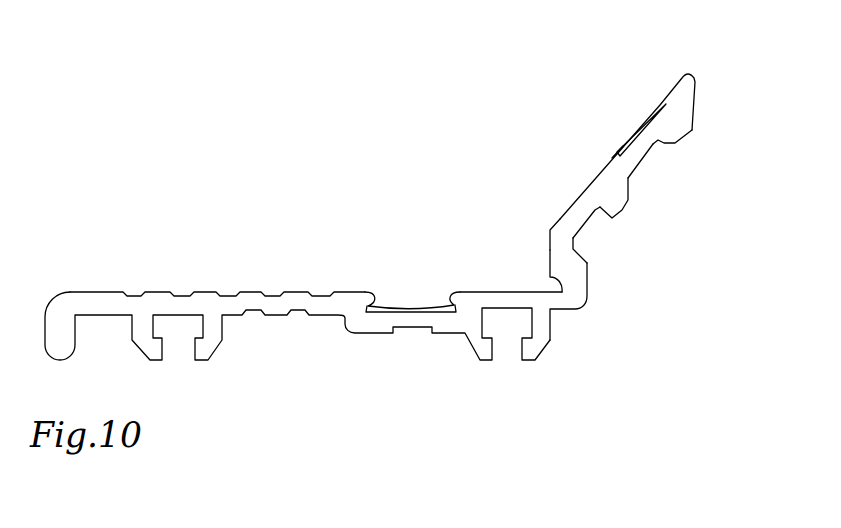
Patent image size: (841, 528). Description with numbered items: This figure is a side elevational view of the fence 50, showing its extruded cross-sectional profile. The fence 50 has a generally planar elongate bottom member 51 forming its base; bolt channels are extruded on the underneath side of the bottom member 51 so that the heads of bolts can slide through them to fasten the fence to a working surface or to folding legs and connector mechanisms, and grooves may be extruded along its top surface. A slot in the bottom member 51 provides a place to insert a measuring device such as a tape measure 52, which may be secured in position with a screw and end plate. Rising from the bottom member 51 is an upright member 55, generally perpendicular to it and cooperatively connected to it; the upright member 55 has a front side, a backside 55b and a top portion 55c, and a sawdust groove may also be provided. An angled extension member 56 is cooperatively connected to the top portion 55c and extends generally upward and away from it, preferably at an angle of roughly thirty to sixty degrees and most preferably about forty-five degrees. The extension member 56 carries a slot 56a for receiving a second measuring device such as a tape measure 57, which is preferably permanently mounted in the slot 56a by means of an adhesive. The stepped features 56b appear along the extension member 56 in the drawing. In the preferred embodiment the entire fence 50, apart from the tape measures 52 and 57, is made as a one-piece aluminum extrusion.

The fence 50 is at (524, 157).
The bottom member 51 is at (258, 300).
The tape measure 52 is at (371, 305).
The upright member 55 is at (550, 258).
The backside 55b is at (574, 247).
The top portion 55c is at (549, 236).
The extension member 56 is at (613, 173).
The slot 56a is at (628, 140).
The steps of inclined arm 56b is at (676, 133).
The tape measure 57 is at (622, 145).